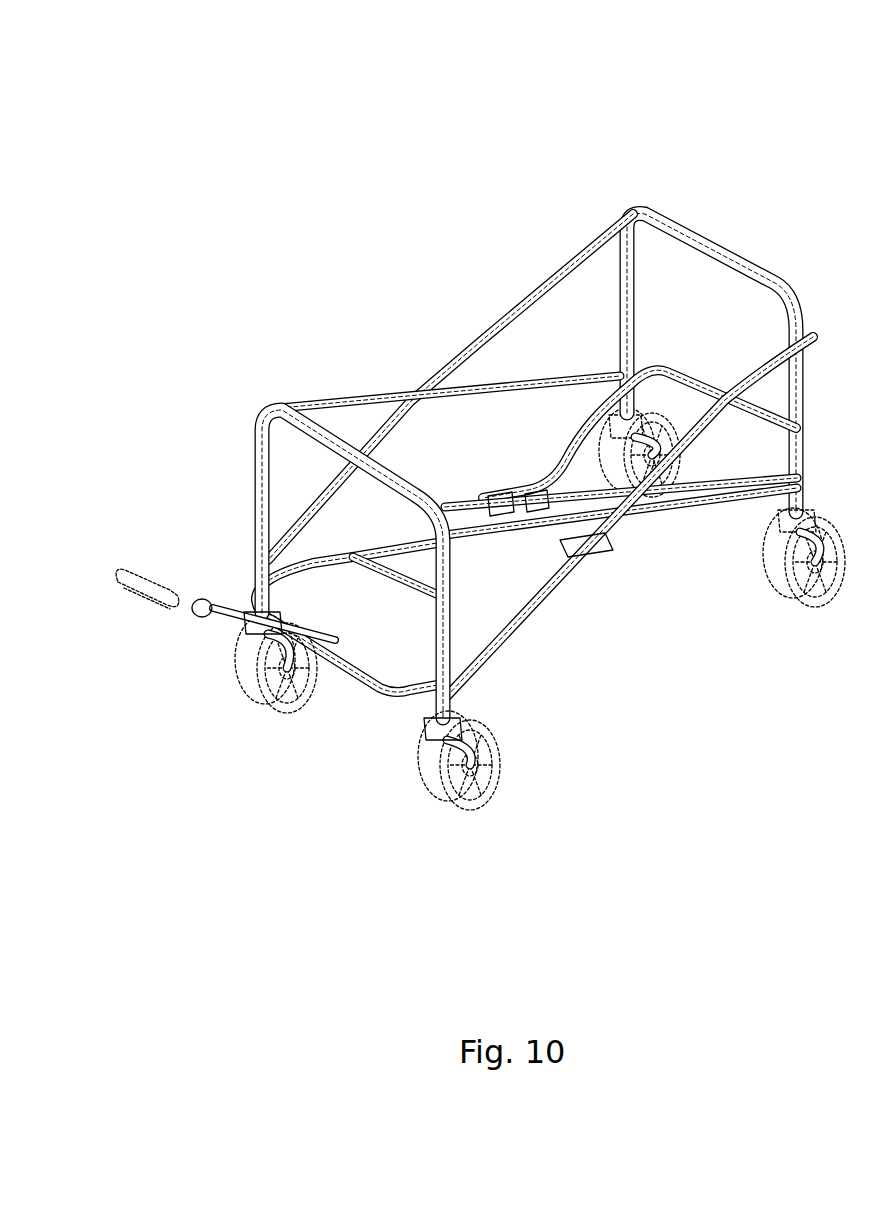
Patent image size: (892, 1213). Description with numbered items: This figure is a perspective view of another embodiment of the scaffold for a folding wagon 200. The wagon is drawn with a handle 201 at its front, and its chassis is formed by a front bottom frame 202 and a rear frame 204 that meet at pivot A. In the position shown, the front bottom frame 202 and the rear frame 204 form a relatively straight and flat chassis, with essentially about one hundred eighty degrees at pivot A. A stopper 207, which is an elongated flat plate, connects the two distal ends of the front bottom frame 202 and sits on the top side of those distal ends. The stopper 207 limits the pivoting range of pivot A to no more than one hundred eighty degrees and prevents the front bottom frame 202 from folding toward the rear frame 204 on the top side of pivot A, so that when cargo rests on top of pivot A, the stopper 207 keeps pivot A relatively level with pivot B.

The folding wagon 200 is at (433, 431).
The handle 201 is at (133, 590).
The front bottom frame 202 is at (393, 547).
The rear frame 204 is at (577, 440).
The stopper 207 is at (536, 494).
The pivot A is at (500, 508).
The pivot B is at (262, 584).